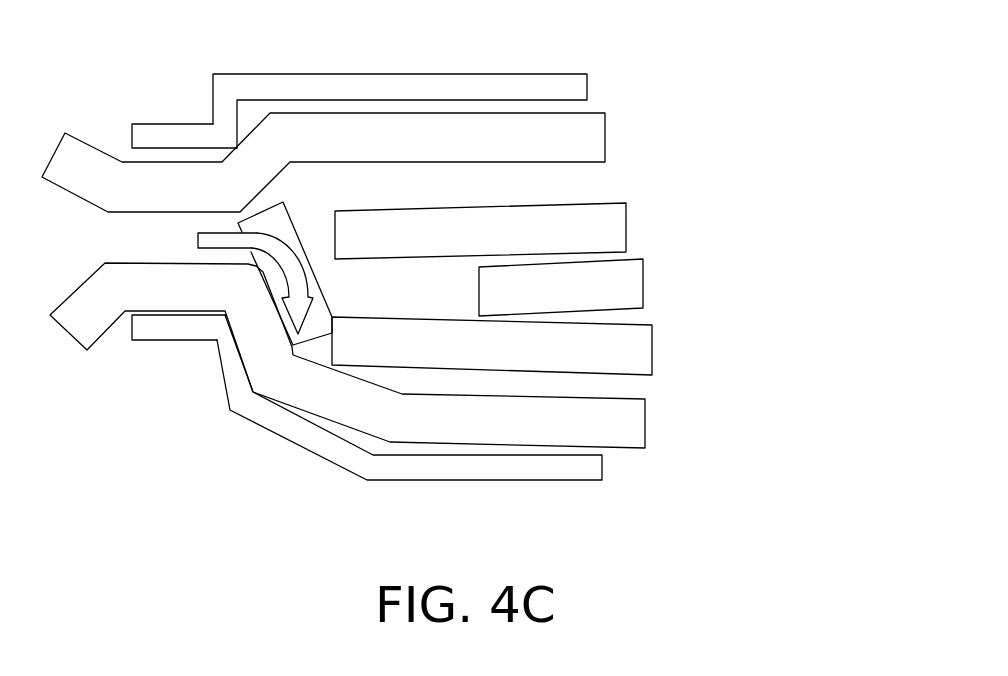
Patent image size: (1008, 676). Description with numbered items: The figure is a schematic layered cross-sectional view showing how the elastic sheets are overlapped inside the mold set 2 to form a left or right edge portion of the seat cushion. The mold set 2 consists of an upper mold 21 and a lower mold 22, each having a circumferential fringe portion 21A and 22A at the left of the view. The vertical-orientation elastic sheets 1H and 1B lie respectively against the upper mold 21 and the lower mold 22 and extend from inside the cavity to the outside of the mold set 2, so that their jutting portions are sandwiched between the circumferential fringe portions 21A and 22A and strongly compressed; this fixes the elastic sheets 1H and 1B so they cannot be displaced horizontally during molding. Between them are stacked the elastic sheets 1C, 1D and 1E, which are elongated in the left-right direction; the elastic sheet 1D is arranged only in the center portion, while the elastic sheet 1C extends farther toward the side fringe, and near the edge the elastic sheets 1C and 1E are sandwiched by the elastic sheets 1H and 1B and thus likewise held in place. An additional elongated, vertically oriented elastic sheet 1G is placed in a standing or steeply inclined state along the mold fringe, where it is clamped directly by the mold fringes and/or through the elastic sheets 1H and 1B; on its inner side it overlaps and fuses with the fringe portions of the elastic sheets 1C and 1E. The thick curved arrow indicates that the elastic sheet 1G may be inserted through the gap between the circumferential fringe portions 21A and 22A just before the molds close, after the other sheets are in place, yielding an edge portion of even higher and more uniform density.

The mold set 2 is at (738, 505).
The upper mold 21 is at (600, 75).
The circumferential fringe portion of the upper mold 21A is at (169, 114).
The lower mold 22 is at (615, 469).
The circumferential fringe portion of the lower mold 22A is at (178, 354).
The elastic sheet 1B is at (658, 420).
The elastic sheet 1C is at (663, 347).
The elastic sheet 1D is at (656, 280).
The elastic sheet 1E is at (638, 223).
The elongated elastic sheet 1G is at (273, 208).
The elastic sheet 1H is at (619, 132).